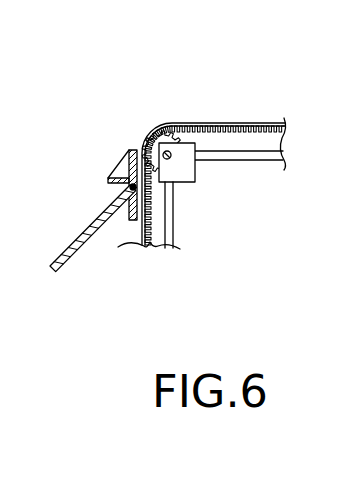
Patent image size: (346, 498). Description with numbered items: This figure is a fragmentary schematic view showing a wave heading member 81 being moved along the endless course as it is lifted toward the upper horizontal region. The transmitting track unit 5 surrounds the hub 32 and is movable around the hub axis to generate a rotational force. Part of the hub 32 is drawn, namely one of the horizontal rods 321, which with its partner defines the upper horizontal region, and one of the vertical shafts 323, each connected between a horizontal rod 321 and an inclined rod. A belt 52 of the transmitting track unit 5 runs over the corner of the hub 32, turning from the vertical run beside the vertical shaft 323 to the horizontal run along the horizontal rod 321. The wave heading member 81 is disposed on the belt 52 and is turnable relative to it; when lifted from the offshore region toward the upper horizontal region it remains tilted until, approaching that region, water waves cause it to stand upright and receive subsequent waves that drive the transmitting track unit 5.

The transmitting track unit 5 is at (220, 122).
The belt 52 is at (248, 122).
The hub 32 is at (186, 224).
The horizontal rod 321 is at (241, 151).
The vertical shaft 323 is at (150, 249).
The wave heading member 81 is at (83, 242).